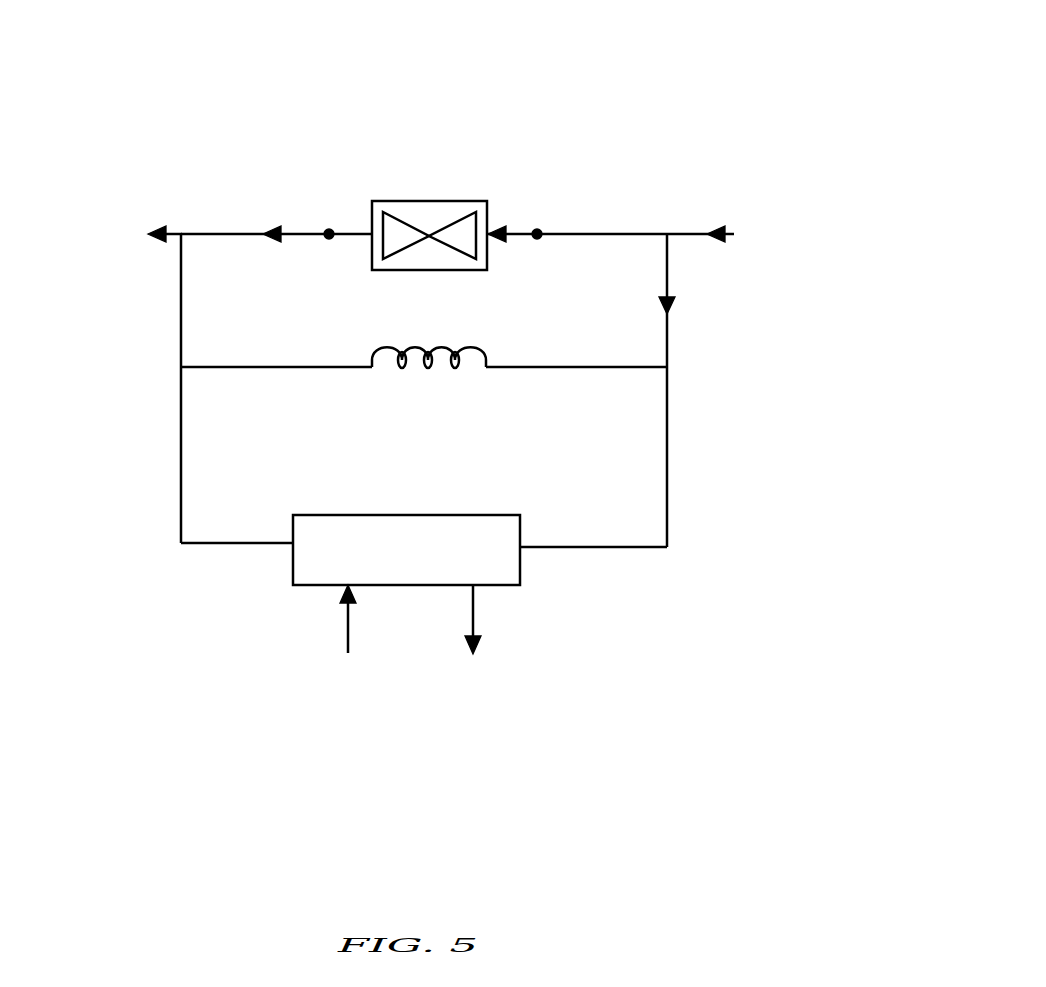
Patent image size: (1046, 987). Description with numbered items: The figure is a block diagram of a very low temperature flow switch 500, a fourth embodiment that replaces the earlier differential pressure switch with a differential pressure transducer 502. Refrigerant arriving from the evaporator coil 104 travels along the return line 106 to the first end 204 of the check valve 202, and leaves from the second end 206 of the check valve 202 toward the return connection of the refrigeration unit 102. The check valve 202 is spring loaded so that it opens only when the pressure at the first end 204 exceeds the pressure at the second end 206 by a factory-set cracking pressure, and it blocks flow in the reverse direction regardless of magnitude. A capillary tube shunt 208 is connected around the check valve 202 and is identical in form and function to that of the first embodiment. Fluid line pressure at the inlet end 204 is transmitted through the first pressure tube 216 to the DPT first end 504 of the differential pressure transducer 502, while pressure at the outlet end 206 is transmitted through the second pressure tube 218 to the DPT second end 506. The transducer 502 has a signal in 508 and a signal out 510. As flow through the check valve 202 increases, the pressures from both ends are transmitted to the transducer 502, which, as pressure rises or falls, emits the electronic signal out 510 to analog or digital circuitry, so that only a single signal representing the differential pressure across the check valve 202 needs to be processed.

The very low temperature flow switch 500 is at (652, 78).
The refrigeration unit 102 is at (122, 221).
The evaporator coil 104 is at (818, 246).
The return line 106 is at (691, 234).
The check valve 202 is at (419, 201).
The first end 204 is at (488, 212).
The second end 206 is at (370, 220).
The capillary tube shunt 208 is at (430, 368).
The first pressure tube 216 is at (668, 285).
The second pressure tube 218 is at (180, 284).
The differential pressure transducer 502 is at (475, 575).
The DPT first end 504 is at (521, 553).
The DPT second end 506 is at (292, 552).
The signal in 508 is at (348, 635).
The signal out 510 is at (473, 635).